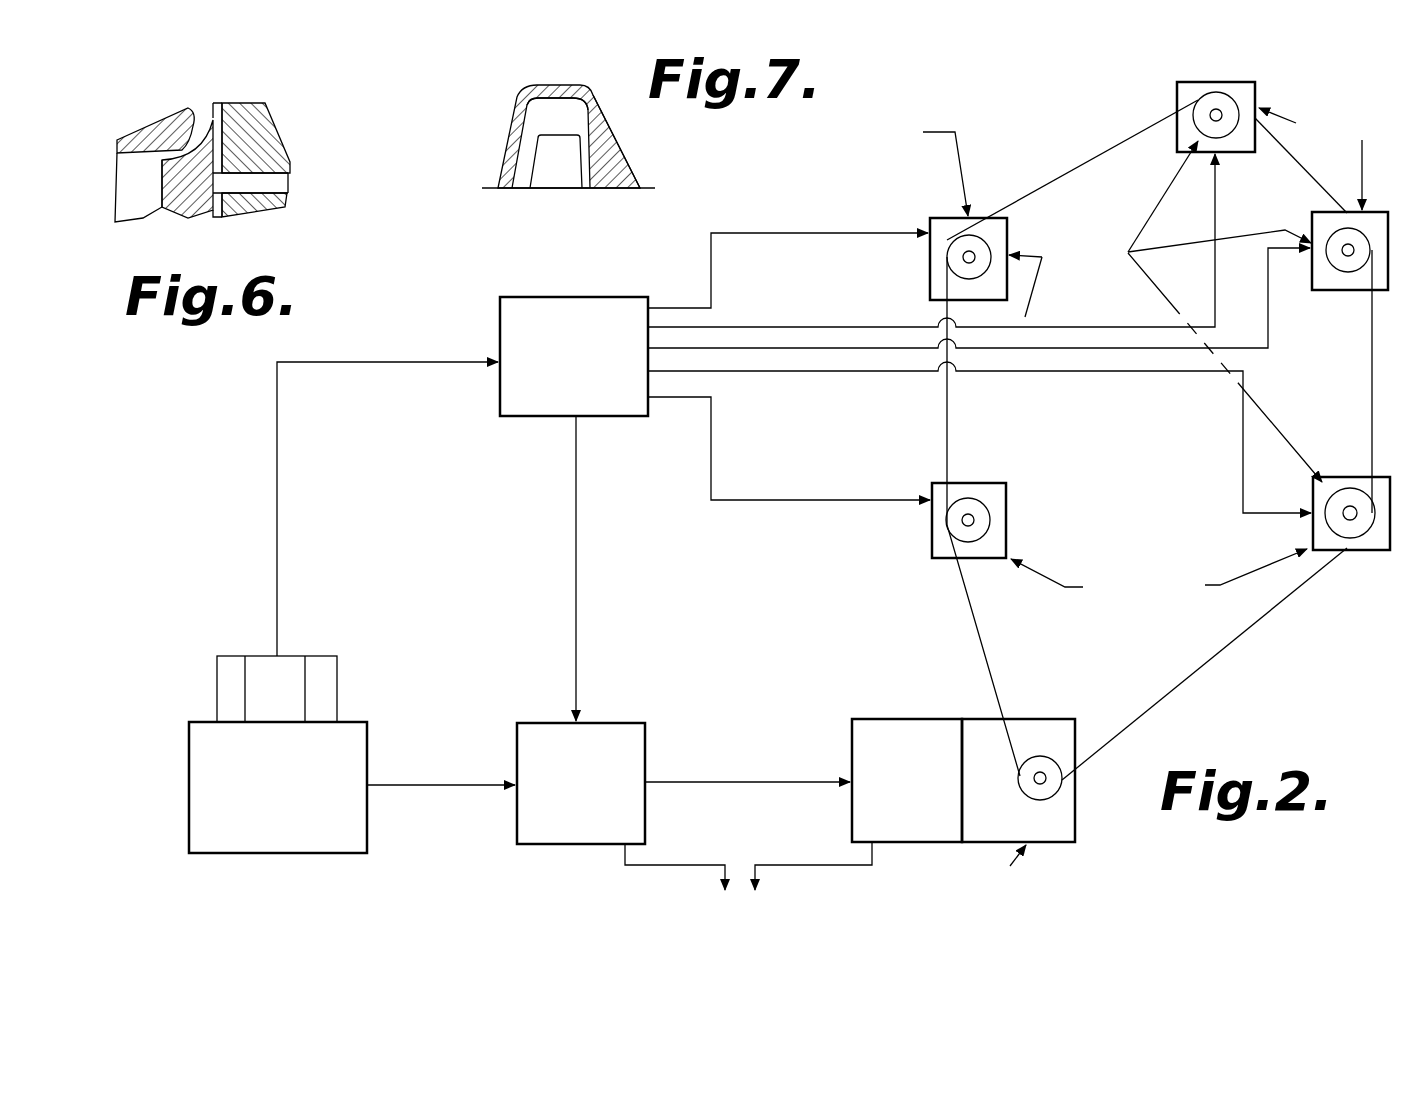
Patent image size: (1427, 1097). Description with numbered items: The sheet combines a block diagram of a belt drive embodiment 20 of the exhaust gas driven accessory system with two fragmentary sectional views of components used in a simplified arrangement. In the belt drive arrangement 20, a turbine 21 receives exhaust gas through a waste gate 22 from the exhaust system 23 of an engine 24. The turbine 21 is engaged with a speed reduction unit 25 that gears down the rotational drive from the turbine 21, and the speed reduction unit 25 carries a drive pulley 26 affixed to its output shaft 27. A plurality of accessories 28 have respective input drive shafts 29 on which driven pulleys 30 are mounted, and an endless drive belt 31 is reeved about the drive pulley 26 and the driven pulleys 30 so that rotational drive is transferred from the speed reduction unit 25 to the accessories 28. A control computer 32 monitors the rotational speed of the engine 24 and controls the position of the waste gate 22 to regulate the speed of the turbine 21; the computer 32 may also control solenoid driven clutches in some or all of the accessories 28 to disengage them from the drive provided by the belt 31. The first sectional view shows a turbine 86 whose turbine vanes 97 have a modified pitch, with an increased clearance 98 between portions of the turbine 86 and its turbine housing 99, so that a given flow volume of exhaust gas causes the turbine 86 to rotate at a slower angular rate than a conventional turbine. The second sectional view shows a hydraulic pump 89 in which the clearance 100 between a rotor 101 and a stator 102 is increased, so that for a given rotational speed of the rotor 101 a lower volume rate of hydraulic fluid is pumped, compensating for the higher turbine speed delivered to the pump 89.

In FIG. 2, the belt drive embodiment 20 is at (214, 493).
In FIG. 2, the turbine 21 is at (852, 719).
In FIG. 2, the waste gate 22 is at (645, 723).
In FIG. 2, the exhaust system 23 is at (451, 787).
In FIG. 2, the engine 24 is at (367, 722).
In FIG. 2, the speed reduction unit 25 is at (1075, 842).
In FIG. 2, the drive pulley 26 is at (1033, 757).
In FIG. 2, the output shaft 27 is at (1034, 784).
In FIG. 2, the accessories 28 is at (1177, 97).
In FIG. 2, the input drive shafts 29 is at (1217, 109).
In FIG. 2, the driven pulleys 30 is at (1236, 98).
In FIG. 2, the drive belt 31 is at (1187, 678).
In FIG. 2, the control computer 32 is at (500, 297).
In FIG. 6, the turbine 86 is at (163, 101).
In FIG. 6, the turbine vanes 97 is at (160, 168).
In FIG. 6, the clearance 98 is at (200, 125).
In FIG. 6, the turbine housing 99 is at (150, 132).
In FIG. 7, the hydraulic pump 89 is at (530, 85).
In FIG. 7, the clearance 100 is at (542, 112).
In FIG. 7, the rotor 101 is at (565, 160).
In FIG. 7, the stator 102 is at (622, 170).